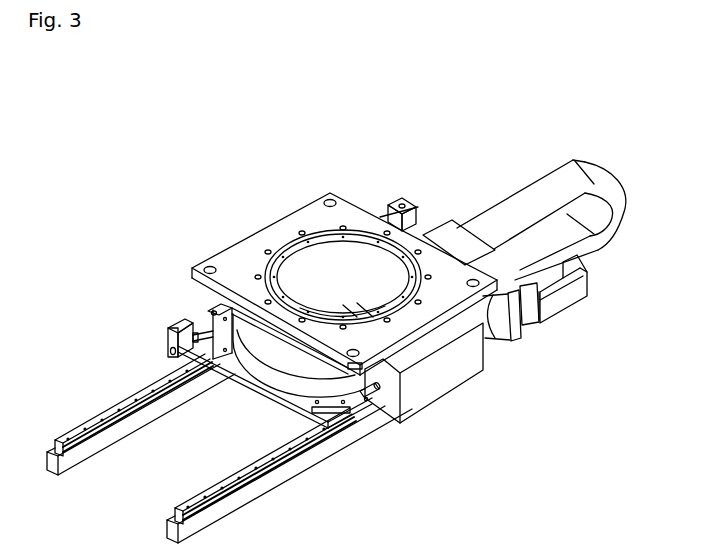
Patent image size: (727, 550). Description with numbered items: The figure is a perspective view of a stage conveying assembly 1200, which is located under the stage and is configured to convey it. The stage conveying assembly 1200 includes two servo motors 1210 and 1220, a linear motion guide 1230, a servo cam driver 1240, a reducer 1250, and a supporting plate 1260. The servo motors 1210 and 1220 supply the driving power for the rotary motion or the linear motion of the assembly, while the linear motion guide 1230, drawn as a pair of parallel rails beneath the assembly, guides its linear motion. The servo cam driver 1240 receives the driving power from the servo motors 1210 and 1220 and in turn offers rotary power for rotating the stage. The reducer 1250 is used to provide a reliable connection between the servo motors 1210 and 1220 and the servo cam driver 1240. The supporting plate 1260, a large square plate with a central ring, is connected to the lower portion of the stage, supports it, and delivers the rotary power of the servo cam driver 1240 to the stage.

The stage conveying assembly 1200 is at (558, 74).
The servo motor 1210 is at (393, 200).
The servo motor 1220 is at (566, 295).
The linear motion guide 1230 is at (127, 400).
The servo cam driver 1240 is at (263, 333).
The reducer 1250 is at (493, 328).
The supporting plate 1260 is at (300, 218).